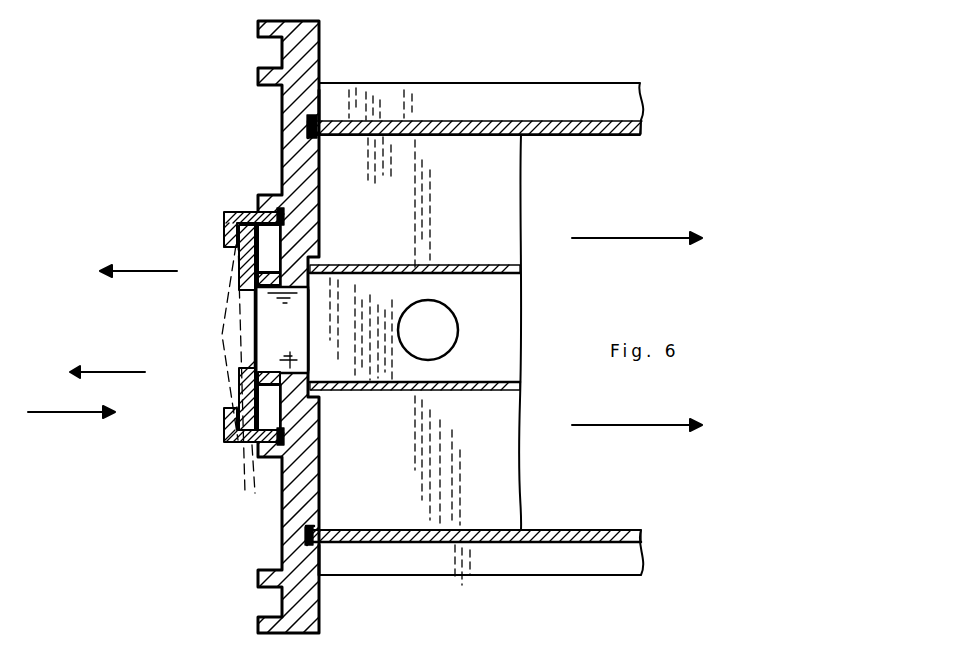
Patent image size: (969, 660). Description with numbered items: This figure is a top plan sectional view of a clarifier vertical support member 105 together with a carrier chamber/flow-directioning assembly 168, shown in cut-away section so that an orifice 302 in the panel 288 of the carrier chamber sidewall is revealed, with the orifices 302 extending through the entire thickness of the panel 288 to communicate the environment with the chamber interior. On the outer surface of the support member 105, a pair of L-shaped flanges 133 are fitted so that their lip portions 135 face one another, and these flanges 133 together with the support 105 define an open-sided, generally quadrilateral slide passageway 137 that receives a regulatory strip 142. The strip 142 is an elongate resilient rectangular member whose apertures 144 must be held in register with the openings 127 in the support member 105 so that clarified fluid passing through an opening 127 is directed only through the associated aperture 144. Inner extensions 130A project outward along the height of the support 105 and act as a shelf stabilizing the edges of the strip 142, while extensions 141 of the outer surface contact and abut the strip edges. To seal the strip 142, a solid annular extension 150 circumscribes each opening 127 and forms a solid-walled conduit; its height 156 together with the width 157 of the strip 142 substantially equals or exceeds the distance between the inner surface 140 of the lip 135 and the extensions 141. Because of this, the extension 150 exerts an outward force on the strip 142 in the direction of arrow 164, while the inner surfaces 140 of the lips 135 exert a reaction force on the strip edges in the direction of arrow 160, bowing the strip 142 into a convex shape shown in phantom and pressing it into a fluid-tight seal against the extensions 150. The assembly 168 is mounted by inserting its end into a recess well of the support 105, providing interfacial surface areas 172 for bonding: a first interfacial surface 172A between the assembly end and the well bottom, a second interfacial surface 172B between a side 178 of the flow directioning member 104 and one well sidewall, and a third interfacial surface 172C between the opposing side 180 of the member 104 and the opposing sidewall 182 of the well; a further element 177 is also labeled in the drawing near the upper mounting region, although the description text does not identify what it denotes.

The flow directioning member 104 is at (508, 92).
The support member 105 is at (290, 512).
The opening 127 is at (310, 330).
The inner extension 130A is at (278, 237).
The L-shaped flange 133 is at (230, 212).
The lip portion 135 is at (225, 242).
The slide passageway 137 is at (230, 333).
The inner surface of the lip 140 is at (225, 228).
The extension of the outer surface 141 is at (280, 217).
The regulatory strip 142 is at (232, 373).
The aperture 144 is at (247, 317).
The annular extension 150 is at (282, 407).
The height of the extension 156 is at (266, 322).
The width of the strip 157 is at (248, 495).
The arrow indicating reaction force direction 160 is at (73, 414).
The arrow indicating outward force direction 164 is at (637, 238).
The assembly 168 is at (578, 558).
The interfacial surface area 172 is at (310, 532).
The first interfacial surface 172A is at (307, 543).
The second interfacial surface 172B is at (307, 526).
The third interfacial surface 172C is at (320, 565).
The upper clip 177 is at (306, 125).
The side of the flow directing member 178 is at (319, 107).
The opposing side of the flow directioning member 180 is at (312, 137).
The opposing sidewall of the recess well 182 is at (309, 135).
The panel 288 is at (506, 327).
The orifice 302 is at (447, 312).